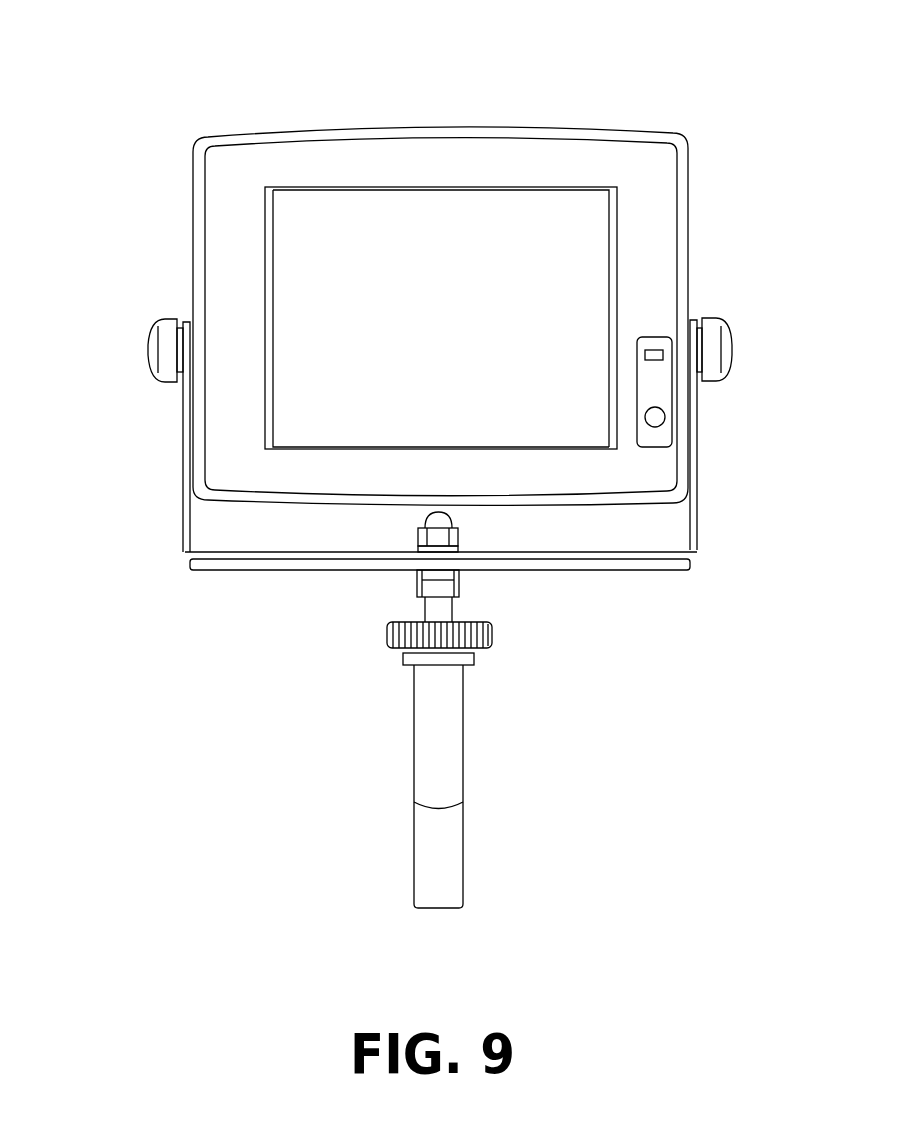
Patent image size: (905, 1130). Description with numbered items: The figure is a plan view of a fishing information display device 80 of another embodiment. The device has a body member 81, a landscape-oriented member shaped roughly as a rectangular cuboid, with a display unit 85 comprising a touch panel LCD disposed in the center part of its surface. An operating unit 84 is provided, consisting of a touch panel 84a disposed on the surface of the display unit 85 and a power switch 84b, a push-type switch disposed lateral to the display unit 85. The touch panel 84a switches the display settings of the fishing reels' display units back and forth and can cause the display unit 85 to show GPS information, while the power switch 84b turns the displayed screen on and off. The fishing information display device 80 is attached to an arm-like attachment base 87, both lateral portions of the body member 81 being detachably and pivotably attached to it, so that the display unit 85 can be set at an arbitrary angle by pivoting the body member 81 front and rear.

The fishing information display device 80 is at (695, 110).
The body member 81 is at (660, 253).
The operating unit 84 is at (313, 383).
The touch panel 84a is at (370, 423).
The power switch 84b is at (660, 415).
The display unit 85 is at (318, 234).
The attachment base 87 is at (378, 563).